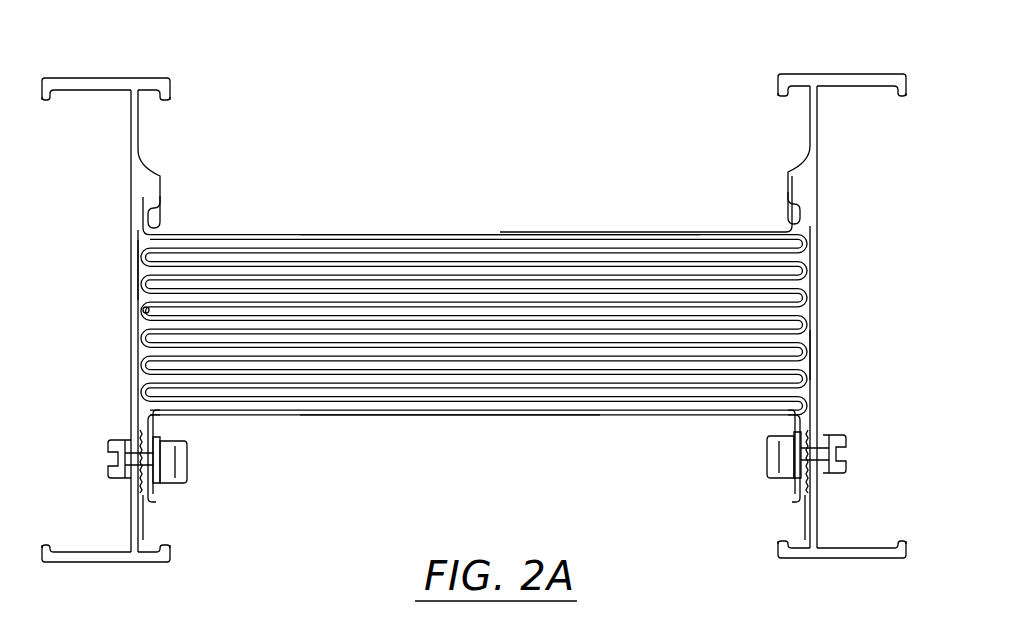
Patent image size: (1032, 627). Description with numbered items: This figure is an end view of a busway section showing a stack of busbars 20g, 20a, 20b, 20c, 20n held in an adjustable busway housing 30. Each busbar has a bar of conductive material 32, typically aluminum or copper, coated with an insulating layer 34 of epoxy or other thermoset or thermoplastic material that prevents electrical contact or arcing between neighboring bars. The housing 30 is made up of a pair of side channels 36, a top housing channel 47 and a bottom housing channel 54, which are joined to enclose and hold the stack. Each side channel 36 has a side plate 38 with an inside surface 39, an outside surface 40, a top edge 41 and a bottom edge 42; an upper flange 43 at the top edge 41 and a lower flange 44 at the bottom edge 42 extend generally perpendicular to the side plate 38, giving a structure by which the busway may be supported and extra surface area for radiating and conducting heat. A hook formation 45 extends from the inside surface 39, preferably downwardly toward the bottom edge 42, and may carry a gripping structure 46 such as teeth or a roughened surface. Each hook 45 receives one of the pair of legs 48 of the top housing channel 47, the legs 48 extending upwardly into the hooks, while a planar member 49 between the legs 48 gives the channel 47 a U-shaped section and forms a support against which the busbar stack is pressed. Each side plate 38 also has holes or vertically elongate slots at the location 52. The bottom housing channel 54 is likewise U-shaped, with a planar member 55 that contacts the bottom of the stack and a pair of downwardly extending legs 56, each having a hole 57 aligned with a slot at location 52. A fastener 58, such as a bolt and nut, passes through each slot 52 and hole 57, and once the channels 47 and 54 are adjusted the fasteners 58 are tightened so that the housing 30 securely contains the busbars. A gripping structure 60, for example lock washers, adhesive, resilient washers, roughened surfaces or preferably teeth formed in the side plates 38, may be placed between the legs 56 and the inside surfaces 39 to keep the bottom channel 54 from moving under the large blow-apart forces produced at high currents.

The busway housing 30 is at (586, 24).
The bar of conductive material 32 is at (534, 324).
The insulating layer 34 is at (826, 258).
The side channel 36 is at (192, 48).
The side plate 38 is at (135, 264).
The inside surface 39 is at (140, 307).
The outside surface 40 is at (130, 505).
The top edge 41 is at (126, 96).
The bottom edge 42 is at (128, 545).
The upper flange 43 is at (97, 78).
The lower flange 44 is at (100, 565).
The hook formation 45 is at (163, 175).
The gripping structure 46 is at (162, 208).
The top housing channel 47 is at (489, 235).
The leg 48 is at (140, 215).
The planar member 49 is at (547, 235).
The location of holes or elongate slots 52 is at (128, 407).
The bottom housing channel 54 is at (422, 414).
The planar member 55 is at (483, 414).
The leg 56 is at (165, 485).
The hole 57 is at (190, 459).
The fastener 58 is at (188, 440).
The gripping structure 60 is at (108, 442).
The busbar 20a is at (822, 287).
The busbar 20b is at (822, 310).
The busbar 20c is at (822, 333).
The busbar 20g is at (822, 240).
The busbar 20n is at (822, 376).